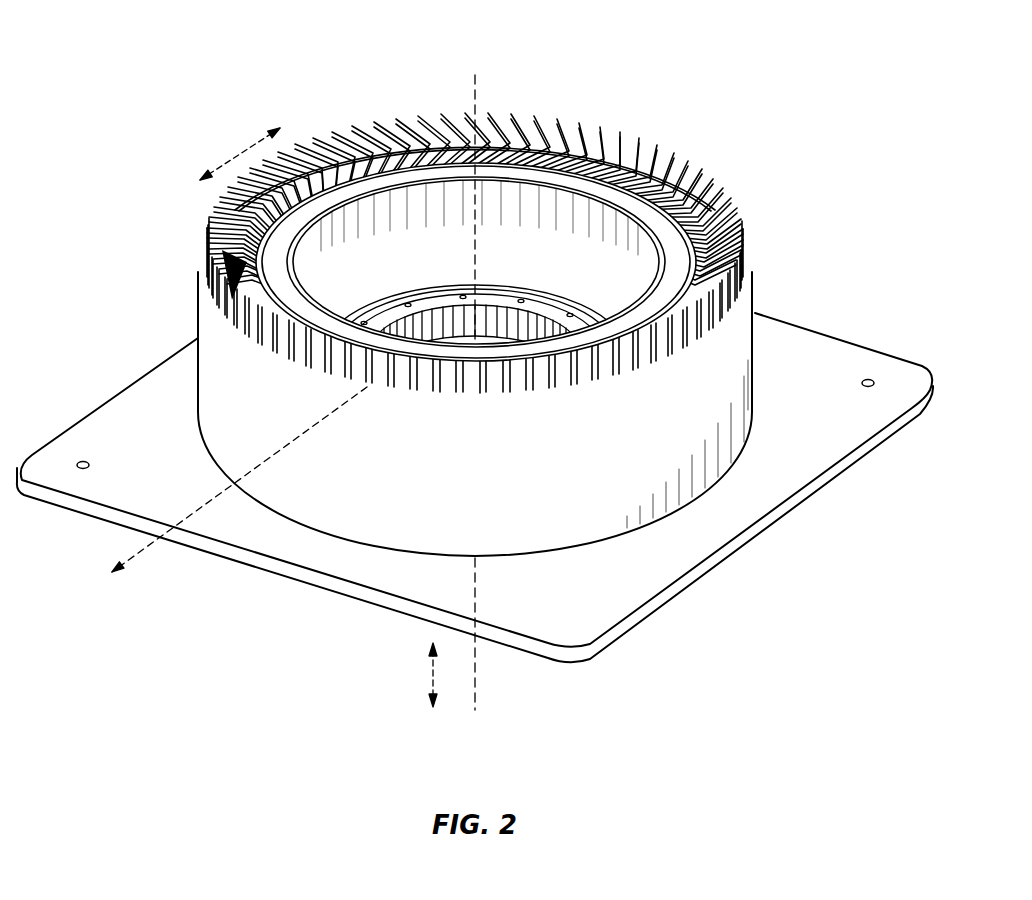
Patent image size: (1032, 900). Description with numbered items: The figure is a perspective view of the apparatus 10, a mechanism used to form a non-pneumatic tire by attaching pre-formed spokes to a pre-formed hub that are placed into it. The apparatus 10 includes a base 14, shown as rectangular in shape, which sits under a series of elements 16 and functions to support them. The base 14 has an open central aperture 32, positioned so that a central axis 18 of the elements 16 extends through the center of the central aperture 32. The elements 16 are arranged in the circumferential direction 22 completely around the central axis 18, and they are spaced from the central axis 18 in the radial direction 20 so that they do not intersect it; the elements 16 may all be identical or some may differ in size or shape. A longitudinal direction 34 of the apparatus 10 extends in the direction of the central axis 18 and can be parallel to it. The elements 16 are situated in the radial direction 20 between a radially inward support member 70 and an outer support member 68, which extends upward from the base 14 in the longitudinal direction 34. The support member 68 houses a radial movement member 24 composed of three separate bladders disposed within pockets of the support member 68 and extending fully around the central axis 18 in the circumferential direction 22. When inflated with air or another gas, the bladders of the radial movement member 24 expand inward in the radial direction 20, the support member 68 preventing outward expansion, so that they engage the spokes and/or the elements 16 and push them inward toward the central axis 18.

The apparatus 10 is at (778, 105).
The base 14 is at (817, 358).
The elements 16 is at (593, 130).
The central axis 18 is at (478, 90).
The radial direction 20 is at (140, 554).
The circumferential direction 22 is at (238, 150).
The radial movement member 24 is at (751, 233).
The central aperture 32 is at (483, 347).
The longitudinal direction 34 is at (430, 672).
The support member 68 is at (213, 367).
The radially inward support member 70 is at (418, 222).